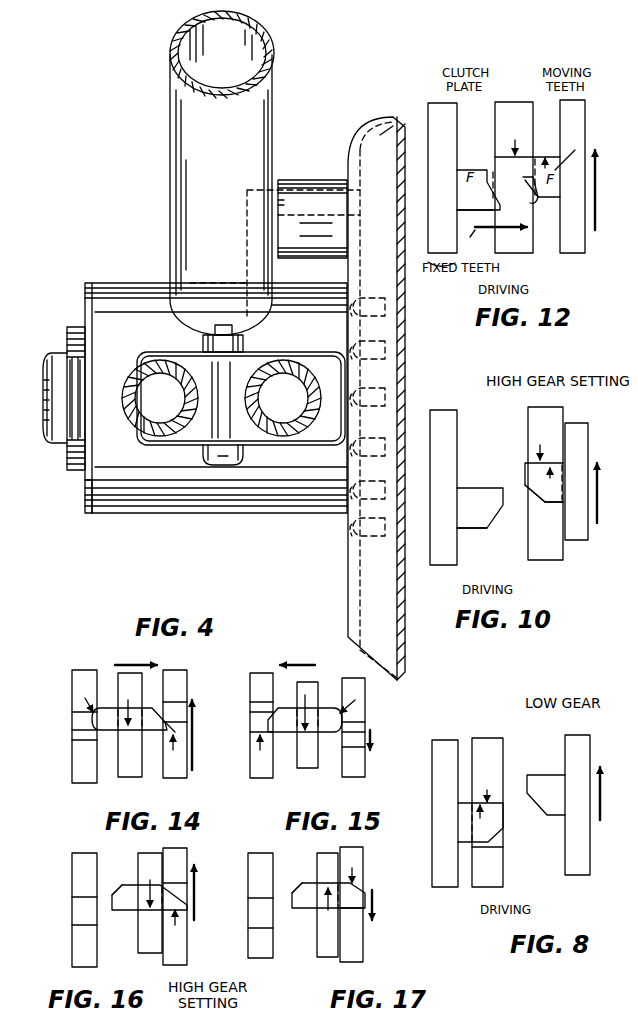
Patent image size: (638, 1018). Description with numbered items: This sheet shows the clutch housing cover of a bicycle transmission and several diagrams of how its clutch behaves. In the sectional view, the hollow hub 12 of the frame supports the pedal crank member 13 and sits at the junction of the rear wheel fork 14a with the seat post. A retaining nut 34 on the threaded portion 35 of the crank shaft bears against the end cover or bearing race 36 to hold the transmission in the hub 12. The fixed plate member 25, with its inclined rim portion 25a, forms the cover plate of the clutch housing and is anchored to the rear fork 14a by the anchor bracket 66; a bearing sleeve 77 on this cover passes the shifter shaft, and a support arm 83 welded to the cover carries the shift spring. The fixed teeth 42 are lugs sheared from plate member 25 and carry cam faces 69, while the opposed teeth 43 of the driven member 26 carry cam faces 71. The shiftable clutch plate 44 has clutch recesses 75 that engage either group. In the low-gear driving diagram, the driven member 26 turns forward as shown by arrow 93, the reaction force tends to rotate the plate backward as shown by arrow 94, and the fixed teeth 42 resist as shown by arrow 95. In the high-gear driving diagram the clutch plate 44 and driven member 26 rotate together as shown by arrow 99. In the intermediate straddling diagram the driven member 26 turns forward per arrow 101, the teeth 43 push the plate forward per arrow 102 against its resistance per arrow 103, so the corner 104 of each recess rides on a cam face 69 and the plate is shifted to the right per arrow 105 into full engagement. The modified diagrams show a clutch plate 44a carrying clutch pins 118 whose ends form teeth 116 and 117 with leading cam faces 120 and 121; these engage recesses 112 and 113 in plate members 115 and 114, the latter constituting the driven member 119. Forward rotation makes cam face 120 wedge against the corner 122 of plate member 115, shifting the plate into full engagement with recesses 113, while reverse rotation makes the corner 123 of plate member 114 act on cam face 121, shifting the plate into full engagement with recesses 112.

In FIG. 4, the hub 12 is at (190, 508).
In FIG. 4, the pedal crank member 13 is at (57, 352).
In FIG. 4, the rear wheel fork 14a is at (158, 468).
In FIG. 4, the plate member 25 is at (348, 168).
In FIG. 12, the plate member 25 is at (430, 118).
In FIG. 10, the plate member 25 is at (438, 418).
In FIG. 8, the plate member 25 is at (444, 746).
In FIG. 4, the inclined rim portion 25a is at (380, 135).
In FIG. 12, the driven member 26 is at (582, 118).
In FIG. 10, the driven member 26 is at (578, 432).
In FIG. 8, the driven member 26 is at (572, 745).
In FIG. 4, the retaining nut 34 is at (76, 470).
In FIG. 4, the threaded portion 35 is at (67, 455).
In FIG. 4, the end cover or bearing race 36 is at (88, 500).
In FIG. 4, the fixed clutch teeth 42 is at (390, 312).
In FIG. 12, the fixed clutch teeth 42 is at (488, 180).
In FIG. 10, the fixed clutch teeth 42 is at (462, 480).
In FIG. 8, the fixed clutch teeth 42 is at (495, 825).
In FIG. 12, the clutch teeth 43 is at (543, 165).
In FIG. 10, the clutch teeth 43 is at (523, 470).
In FIG. 8, the clutch teeth 43 is at (538, 778).
In FIG. 12, the clutch plate 44 is at (495, 150).
In FIG. 10, the clutch plate 44 is at (560, 556).
In FIG. 8, the clutch plate 44 is at (488, 746).
In FIG. 14, the shiftable clutch plate 44a is at (130, 777).
In FIG. 15, the shiftable clutch plate 44a is at (302, 770).
In FIG. 16, the shiftable clutch plate 44a is at (140, 858).
In FIG. 17, the shiftable clutch plate 44a is at (318, 858).
In FIG. 4, the anchor bracket 66 is at (275, 352).
In FIG. 4, the cam faces 69 is at (386, 397).
In FIG. 12, the cam faces 69 is at (488, 198).
In FIG. 10, the cam faces 69 is at (492, 505).
In FIG. 12, the cam faces 71 is at (528, 198).
In FIG. 10, the cam faces 71 is at (528, 495).
In FIG. 12, the clutch recesses 75 is at (505, 172).
In FIG. 10, the clutch recesses 75 is at (536, 502).
In FIG. 4, the bearing sleeve 77 is at (291, 254).
In FIG. 4, the support arm 83 is at (248, 225).
In FIG. 8, the large arrow 93 is at (600, 798).
In FIG. 8, the small arrow 94 is at (492, 790).
In FIG. 8, the small arrow 95 is at (482, 815).
In FIG. 10, the large arrow 99 is at (598, 498).
In FIG. 12, the large arrow 101 is at (600, 185).
In FIG. 12, the small arrow 102 is at (560, 168).
In FIG. 12, the small arrow 103 is at (490, 120).
In FIG. 12, the corner 104 is at (492, 205).
In FIG. 12, the large arrow 105 is at (480, 228).
In FIG. 14, the clutch recesses 112 is at (95, 730).
In FIG. 15, the clutch recesses 112 is at (270, 720).
In FIG. 16, the clutch recesses 112 is at (75, 902).
In FIG. 17, the clutch recesses 112 is at (295, 905).
In FIG. 14, the clutch recesses 113 is at (175, 722).
In FIG. 16, the clutch recesses 113 is at (185, 892).
In FIG. 17, the clutch recesses 113 is at (360, 888).
In FIG. 14, the plate member 114 is at (178, 686).
In FIG. 15, the plate member 114 is at (360, 700).
In FIG. 16, the plate member 114 is at (175, 866).
In FIG. 17, the plate member 114 is at (360, 861).
In FIG. 14, the plate member 115 is at (82, 672).
In FIG. 15, the plate member 115 is at (256, 680).
In FIG. 16, the plate member 115 is at (80, 862).
In FIG. 17, the plate member 115 is at (252, 864).
In FIG. 14, the clutch teeth 116 is at (95, 718).
In FIG. 15, the clutch teeth 116 is at (255, 735).
In FIG. 16, the clutch teeth 116 is at (112, 903).
In FIG. 17, the clutch teeth 116 is at (273, 918).
In FIG. 14, the clutch teeth 117 is at (185, 730).
In FIG. 15, the clutch teeth 117 is at (372, 730).
In FIG. 16, the clutch teeth 117 is at (187, 906).
In FIG. 17, the clutch teeth 117 is at (365, 912).
In FIG. 14, the clutch pins 118 is at (100, 727).
In FIG. 15, the clutch pins 118 is at (338, 740).
In FIG. 16, the clutch pins 118 is at (138, 900).
In FIG. 17, the clutch pins 118 is at (312, 900).
In FIG. 14, the driven member 119 is at (178, 680).
In FIG. 15, the driven member 119 is at (362, 686).
In FIG. 16, the driven member 119 is at (175, 856).
In FIG. 17, the driven member 119 is at (358, 856).
In FIG. 14, the cam face 120 is at (103, 708).
In FIG. 15, the cam face 120 is at (268, 710).
In FIG. 14, the cam face 121 is at (173, 704).
In FIG. 14, the corner 122 is at (90, 712).
In FIG. 15, the corner 122 is at (262, 702).
In FIG. 15, the corner 123 is at (340, 708).